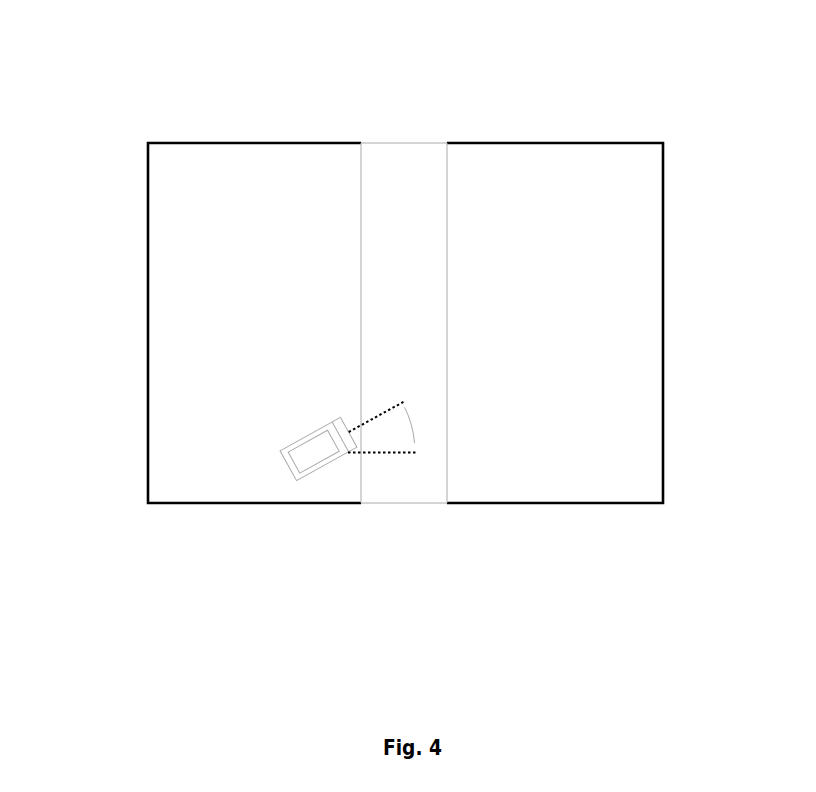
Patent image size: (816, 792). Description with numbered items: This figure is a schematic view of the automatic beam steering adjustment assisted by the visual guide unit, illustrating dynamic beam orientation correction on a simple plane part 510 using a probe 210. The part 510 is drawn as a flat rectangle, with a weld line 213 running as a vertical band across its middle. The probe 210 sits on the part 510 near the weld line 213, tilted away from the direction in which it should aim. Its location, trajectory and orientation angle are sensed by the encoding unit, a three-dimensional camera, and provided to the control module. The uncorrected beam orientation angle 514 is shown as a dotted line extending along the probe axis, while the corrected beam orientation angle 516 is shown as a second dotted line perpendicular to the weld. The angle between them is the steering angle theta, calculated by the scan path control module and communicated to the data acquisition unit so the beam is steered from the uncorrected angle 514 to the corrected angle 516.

The simple plane part 510 is at (177, 475).
The weld line 213 is at (411, 168).
The probe 210 is at (318, 453).
The uncorrected beam orientation angle 514 is at (388, 405).
The corrected beam orientation angle 516 is at (377, 455).